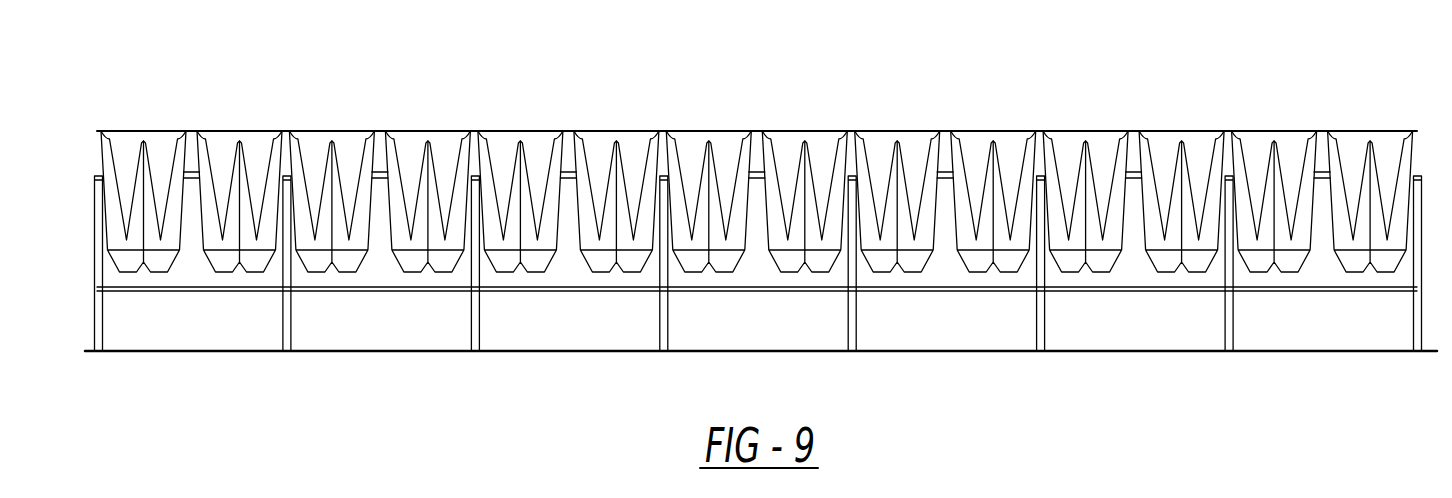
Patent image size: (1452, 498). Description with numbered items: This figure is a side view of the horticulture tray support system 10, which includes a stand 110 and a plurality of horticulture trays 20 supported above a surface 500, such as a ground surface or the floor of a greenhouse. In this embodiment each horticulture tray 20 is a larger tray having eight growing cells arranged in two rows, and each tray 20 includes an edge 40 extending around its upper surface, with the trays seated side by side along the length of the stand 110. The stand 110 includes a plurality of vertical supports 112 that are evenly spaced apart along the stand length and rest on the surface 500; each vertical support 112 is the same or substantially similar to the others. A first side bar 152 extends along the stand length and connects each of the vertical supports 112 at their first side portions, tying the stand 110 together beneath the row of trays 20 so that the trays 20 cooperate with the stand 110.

The horticulture tray support system 10 is at (413, 47).
The horticulture tray 20 is at (184, 131).
The edge 40 is at (101, 131).
The stand 110 is at (1418, 174).
The vertical support 112 is at (103, 327).
The first side bar 152 is at (211, 291).
The surface 500 is at (622, 350).